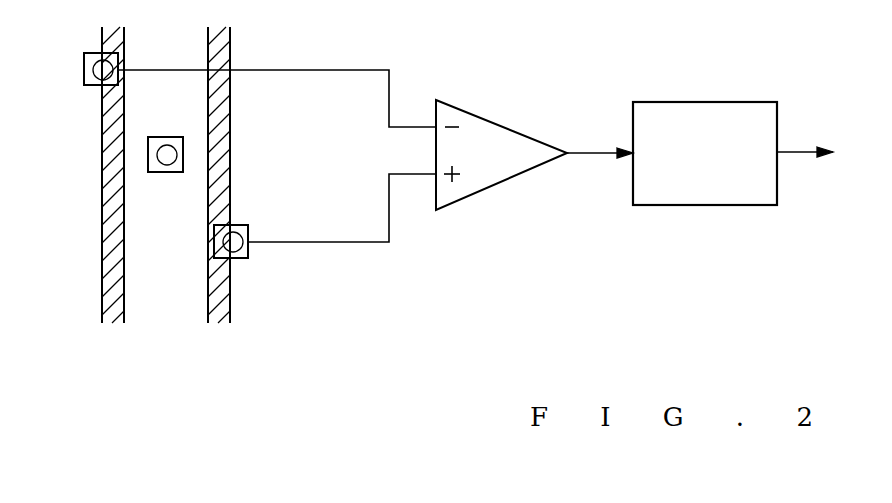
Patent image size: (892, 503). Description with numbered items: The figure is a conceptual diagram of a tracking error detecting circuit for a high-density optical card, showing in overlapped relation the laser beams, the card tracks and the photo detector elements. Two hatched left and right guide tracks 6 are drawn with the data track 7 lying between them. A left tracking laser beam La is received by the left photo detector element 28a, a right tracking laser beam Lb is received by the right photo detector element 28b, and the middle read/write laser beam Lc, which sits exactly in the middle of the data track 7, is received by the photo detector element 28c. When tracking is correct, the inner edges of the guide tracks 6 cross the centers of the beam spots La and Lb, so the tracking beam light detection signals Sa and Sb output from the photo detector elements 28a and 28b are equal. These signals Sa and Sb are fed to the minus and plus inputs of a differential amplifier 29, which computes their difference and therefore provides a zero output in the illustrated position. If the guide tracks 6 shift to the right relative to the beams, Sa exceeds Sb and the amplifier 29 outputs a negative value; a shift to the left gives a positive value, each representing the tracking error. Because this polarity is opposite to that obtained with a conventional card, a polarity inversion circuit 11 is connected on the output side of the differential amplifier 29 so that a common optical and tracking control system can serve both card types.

The guide track 6 is at (116, 313).
The data track 7 is at (170, 308).
The left photo detector element 28a is at (84, 62).
The right photo detector element 28b is at (250, 258).
The photo detector element 28c is at (160, 136).
The left tracking laser beam La is at (100, 78).
The right tracking laser beam Lb is at (242, 226).
The middle read/write laser beam Lc is at (168, 165).
The tracking beam light detection signal Sa is at (277, 79).
The tracking beam light detection signal Sb is at (342, 208).
The differential amplifier 29 is at (486, 118).
The polarity inversion circuit 11 is at (678, 101).